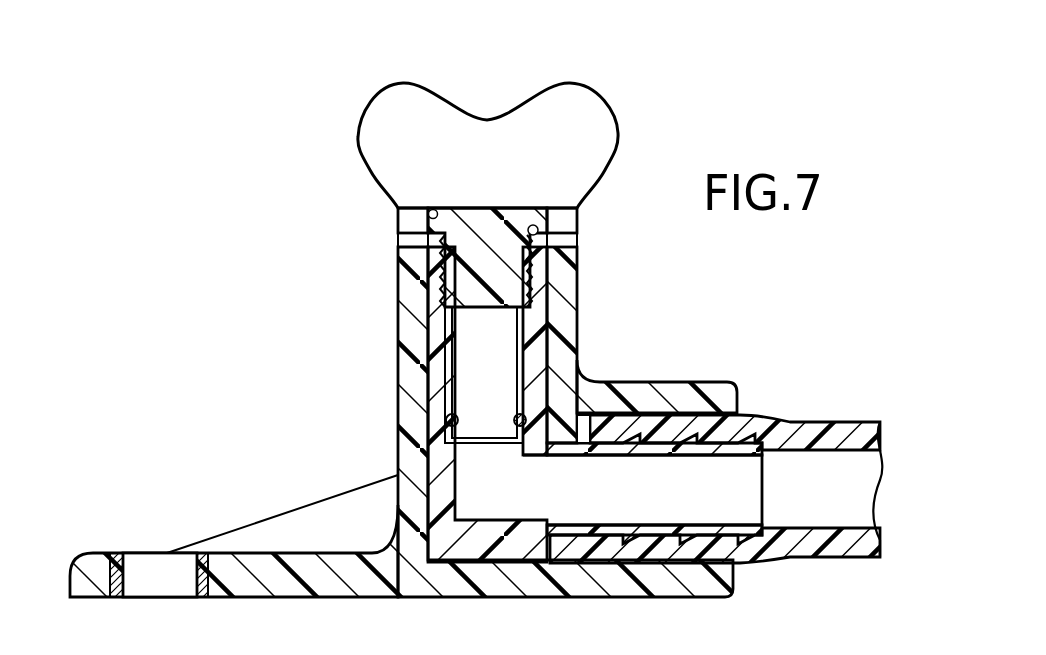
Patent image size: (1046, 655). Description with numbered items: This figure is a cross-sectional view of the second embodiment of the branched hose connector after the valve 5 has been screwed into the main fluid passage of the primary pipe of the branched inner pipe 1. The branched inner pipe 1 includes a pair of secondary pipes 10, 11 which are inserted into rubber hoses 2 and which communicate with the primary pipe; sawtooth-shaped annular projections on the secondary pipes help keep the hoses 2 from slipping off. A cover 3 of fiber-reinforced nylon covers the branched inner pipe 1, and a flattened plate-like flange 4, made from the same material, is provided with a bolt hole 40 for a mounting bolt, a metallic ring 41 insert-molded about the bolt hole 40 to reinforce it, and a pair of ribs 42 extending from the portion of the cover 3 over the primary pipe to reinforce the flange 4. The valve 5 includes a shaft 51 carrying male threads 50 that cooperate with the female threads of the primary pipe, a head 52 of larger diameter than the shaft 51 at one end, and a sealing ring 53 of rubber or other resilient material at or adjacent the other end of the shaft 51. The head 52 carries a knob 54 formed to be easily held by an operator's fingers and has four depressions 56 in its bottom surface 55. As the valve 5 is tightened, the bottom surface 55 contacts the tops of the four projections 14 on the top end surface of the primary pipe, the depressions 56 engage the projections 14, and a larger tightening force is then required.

The branched inner pipe 1 is at (498, 555).
The hose 2 is at (830, 418).
The cover 3 is at (683, 392).
The flange 4 is at (283, 585).
The valve 5 is at (486, 107).
The secondary pipe 10 is at (685, 524).
The secondary pipe 11 is at (685, 524).
The projections 14 is at (565, 264).
The bolt hole 40 is at (160, 574).
The metallic ring 41 is at (113, 553).
The ribs 42 is at (275, 510).
The male threads 50 is at (398, 262).
The shaft 51 is at (475, 360).
The head 52 is at (398, 220).
The sealing ring 53 is at (452, 412).
The knob 54 is at (598, 96).
The bottom surface 55 is at (398, 242).
The depressions 56 is at (433, 235).